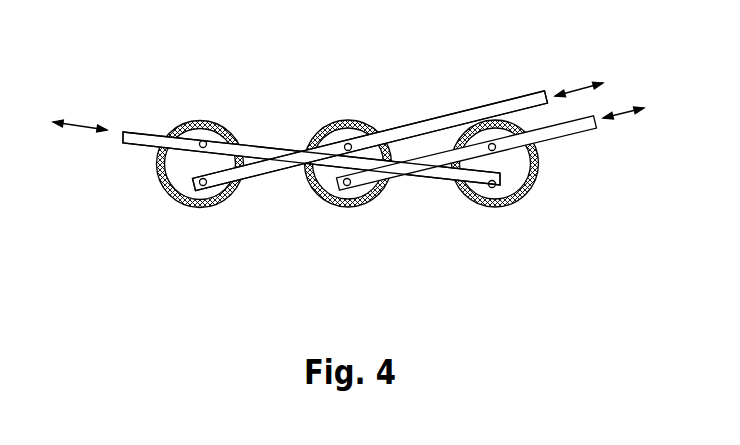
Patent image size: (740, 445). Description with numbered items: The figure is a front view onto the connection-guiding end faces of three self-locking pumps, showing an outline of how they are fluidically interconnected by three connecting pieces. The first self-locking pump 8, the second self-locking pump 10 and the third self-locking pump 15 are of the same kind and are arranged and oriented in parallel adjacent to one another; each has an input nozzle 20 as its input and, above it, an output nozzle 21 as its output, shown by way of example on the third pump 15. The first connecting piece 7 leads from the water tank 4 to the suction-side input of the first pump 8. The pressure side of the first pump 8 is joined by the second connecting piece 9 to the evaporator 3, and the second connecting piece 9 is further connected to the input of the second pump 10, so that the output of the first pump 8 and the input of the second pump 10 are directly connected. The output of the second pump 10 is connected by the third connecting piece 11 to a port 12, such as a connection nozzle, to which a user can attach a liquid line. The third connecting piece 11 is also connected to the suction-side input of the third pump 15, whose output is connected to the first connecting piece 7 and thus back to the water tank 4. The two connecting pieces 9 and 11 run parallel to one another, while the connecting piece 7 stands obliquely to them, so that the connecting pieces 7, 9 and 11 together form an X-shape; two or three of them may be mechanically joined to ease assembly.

The evaporator 3 is at (628, 113).
The water tank 4 is at (80, 130).
The first connecting piece 7 is at (130, 128).
The first self-locking pump 8 is at (484, 210).
The second connecting piece 9 is at (597, 130).
The second self-locking pump 10 is at (352, 212).
The third connecting piece 11 is at (510, 96).
The port 12 is at (577, 88).
The third self-locking pump 15 is at (210, 212).
The input nozzle 20 is at (197, 189).
The output nozzle 21 is at (204, 140).